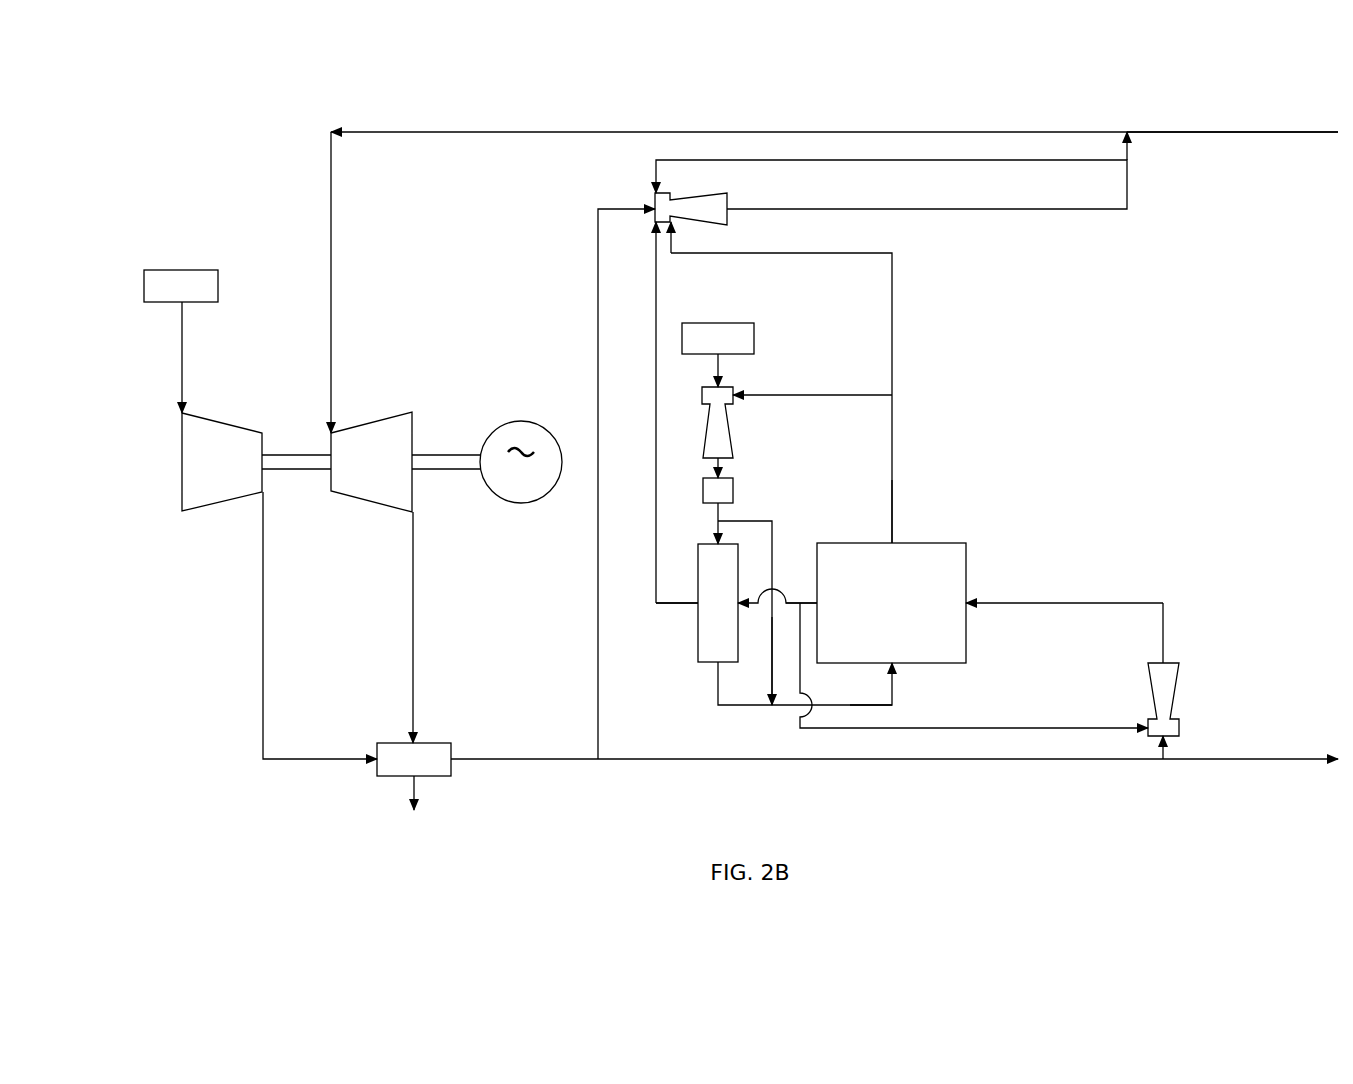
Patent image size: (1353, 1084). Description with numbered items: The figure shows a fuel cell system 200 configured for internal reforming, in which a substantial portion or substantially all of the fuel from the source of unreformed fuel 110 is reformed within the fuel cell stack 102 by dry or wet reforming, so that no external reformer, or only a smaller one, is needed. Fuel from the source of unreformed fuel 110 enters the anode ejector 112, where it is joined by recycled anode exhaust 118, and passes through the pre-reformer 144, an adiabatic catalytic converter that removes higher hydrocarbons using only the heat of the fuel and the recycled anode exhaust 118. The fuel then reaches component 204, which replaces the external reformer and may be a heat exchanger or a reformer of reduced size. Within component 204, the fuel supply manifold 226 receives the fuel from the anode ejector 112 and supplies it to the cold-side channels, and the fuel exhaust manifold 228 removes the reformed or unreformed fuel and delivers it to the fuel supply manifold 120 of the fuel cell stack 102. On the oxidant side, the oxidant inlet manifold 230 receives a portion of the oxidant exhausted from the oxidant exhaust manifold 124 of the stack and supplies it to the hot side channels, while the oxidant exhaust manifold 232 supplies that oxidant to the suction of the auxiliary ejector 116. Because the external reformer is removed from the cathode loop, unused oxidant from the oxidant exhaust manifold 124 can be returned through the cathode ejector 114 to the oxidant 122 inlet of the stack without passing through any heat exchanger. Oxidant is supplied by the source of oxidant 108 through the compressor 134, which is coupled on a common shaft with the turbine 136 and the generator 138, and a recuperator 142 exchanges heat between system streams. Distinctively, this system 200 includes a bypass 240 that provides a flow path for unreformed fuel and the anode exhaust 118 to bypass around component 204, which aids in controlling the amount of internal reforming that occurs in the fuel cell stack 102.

The fuel cell system 200 is at (143, 162).
The fuel cell stack 102 is at (891, 603).
The source of oxidant 108 is at (181, 341).
The source of unreformed fuel 110 is at (718, 355).
The anode ejector 112 is at (716, 441).
The cathode ejector 114 is at (1165, 682).
The auxiliary ejector 116 is at (703, 207).
The anode exhaust 118 is at (900, 532).
The fuel supply manifold 120 is at (905, 668).
The oxidant inlet 122 is at (973, 588).
The oxidant exhaust manifold 124 is at (812, 595).
The compressor 134 is at (279, 586).
The turbine 136 is at (405, 577).
The generator 138 is at (521, 462).
The recuperator 142 is at (857, 509).
The pre-reformer 144 is at (720, 490).
The component 204 is at (697, 603).
The fuel supply manifold 226 is at (705, 538).
The fuel exhaust manifold 228 is at (710, 671).
The oxidant inlet manifold 230 is at (743, 615).
The oxidant exhaust manifold 232 is at (688, 612).
The bypass 240 is at (776, 640).